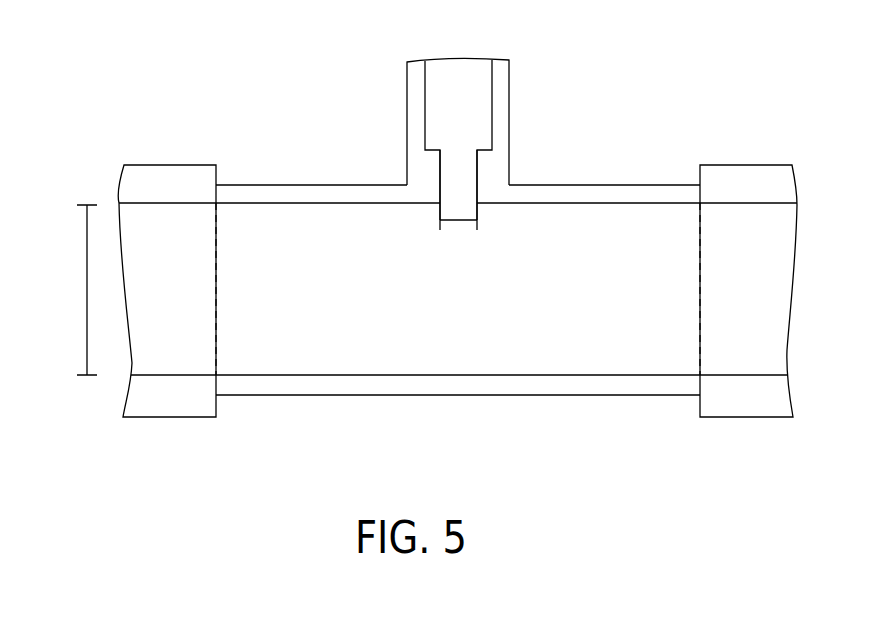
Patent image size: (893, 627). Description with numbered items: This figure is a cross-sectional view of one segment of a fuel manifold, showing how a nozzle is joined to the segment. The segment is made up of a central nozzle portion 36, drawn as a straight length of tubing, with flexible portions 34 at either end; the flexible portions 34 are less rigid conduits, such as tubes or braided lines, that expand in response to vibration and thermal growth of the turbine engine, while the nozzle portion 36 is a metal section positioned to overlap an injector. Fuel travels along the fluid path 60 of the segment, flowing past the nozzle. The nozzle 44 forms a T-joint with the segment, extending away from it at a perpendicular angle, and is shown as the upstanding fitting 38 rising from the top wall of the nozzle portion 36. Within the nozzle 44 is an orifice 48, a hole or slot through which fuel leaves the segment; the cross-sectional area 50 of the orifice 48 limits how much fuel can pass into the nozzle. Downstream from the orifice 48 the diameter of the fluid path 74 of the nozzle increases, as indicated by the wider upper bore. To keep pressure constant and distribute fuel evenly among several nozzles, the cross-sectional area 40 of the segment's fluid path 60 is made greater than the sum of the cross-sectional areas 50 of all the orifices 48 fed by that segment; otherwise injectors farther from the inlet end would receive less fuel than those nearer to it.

The flexible portion 34 is at (170, 417).
The nozzle portion 36 is at (294, 395).
The fitting 38 is at (397, 147).
The cross-sectional area of the fluid path of the segment 40 is at (85, 290).
The nozzle 44 is at (405, 125).
The orifice 48 is at (460, 155).
The cross-sectional area of the orifice 50 is at (458, 221).
The fluid path of the segment 60 is at (617, 363).
The fluid path of the nozzle 74 is at (453, 68).